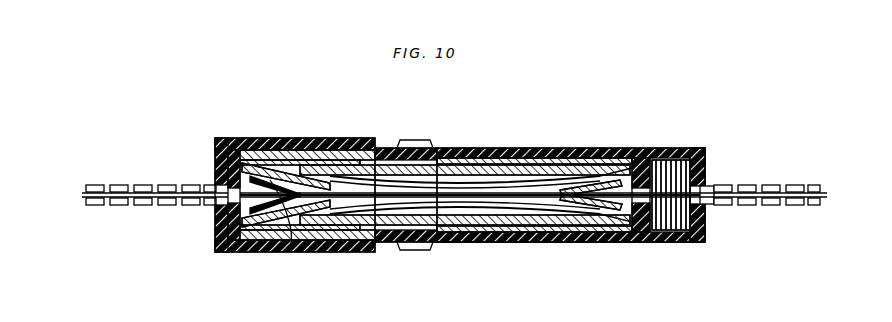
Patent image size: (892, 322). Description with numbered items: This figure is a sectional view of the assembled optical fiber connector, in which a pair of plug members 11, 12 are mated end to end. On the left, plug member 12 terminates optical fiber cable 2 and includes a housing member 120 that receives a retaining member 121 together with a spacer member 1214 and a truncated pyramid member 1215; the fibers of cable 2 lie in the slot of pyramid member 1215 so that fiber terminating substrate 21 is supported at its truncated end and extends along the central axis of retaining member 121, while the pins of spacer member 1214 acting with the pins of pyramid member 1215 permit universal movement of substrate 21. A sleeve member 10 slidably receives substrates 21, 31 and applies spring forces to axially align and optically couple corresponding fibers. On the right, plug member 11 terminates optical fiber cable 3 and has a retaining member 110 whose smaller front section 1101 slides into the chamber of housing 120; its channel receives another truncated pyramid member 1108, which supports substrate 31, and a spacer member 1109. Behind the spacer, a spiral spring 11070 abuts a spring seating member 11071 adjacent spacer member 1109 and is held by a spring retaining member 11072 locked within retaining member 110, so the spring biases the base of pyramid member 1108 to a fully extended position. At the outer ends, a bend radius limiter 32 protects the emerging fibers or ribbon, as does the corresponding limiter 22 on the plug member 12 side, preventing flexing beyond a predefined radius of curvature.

The first lead wire 22 is at (144, 185).
The plug member 12 is at (356, 140).
The housing member 120 is at (325, 140).
The retaining member 121 is at (282, 142).
The spacer member 1214 is at (235, 204).
The optical fiber cable 2 is at (306, 232).
The truncated pyramid member 1215 is at (278, 235).
The front section 1101 is at (414, 148).
The plug member 11 is at (464, 151).
The sleeve member 10 is at (514, 243).
The substrate 21 is at (485, 242).
The substrate 31 is at (473, 186).
The optical fiber cable 3 is at (598, 239).
The truncated pyramid member 1108 is at (618, 232).
The spacer member 1109 is at (640, 148).
The spring seating member 11071 is at (654, 149).
The spiral spring 11070 is at (695, 151).
The retaining member 110 is at (650, 244).
The spring retaining member 11072 is at (710, 170).
The bend radius limiter 32 is at (776, 207).